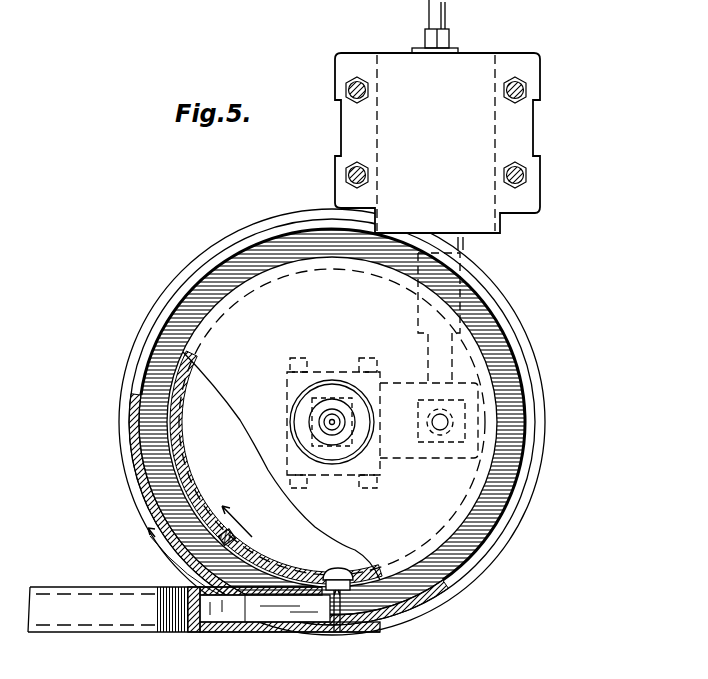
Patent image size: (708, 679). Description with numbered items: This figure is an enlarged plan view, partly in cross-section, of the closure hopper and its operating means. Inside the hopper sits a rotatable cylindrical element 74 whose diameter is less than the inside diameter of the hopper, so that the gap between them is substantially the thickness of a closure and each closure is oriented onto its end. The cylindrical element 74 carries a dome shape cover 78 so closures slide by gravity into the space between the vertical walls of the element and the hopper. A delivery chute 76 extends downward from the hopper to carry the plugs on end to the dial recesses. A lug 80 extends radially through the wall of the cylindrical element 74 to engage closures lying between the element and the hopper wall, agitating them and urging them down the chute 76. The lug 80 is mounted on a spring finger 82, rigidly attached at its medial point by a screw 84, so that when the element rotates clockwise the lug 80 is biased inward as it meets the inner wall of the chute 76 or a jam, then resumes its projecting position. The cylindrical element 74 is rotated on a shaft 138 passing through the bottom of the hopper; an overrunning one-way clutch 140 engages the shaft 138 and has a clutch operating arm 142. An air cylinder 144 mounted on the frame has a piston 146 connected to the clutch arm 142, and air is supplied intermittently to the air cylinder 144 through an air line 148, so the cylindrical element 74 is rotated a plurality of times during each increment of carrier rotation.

The rotatable cylindrical element 74 is at (136, 446).
The delivery chute 76 is at (82, 633).
The dome shape cover 78 is at (248, 313).
The lug 80 is at (353, 600).
The spring finger 82 is at (264, 560).
The screw 84 is at (231, 531).
The shaft 138 is at (355, 435).
The overrunning one-way clutch 140 is at (313, 362).
The clutch operating arm 142 is at (418, 467).
The air cylinder 144 is at (497, 232).
The piston 146 is at (452, 363).
The air line 148 is at (428, 15).